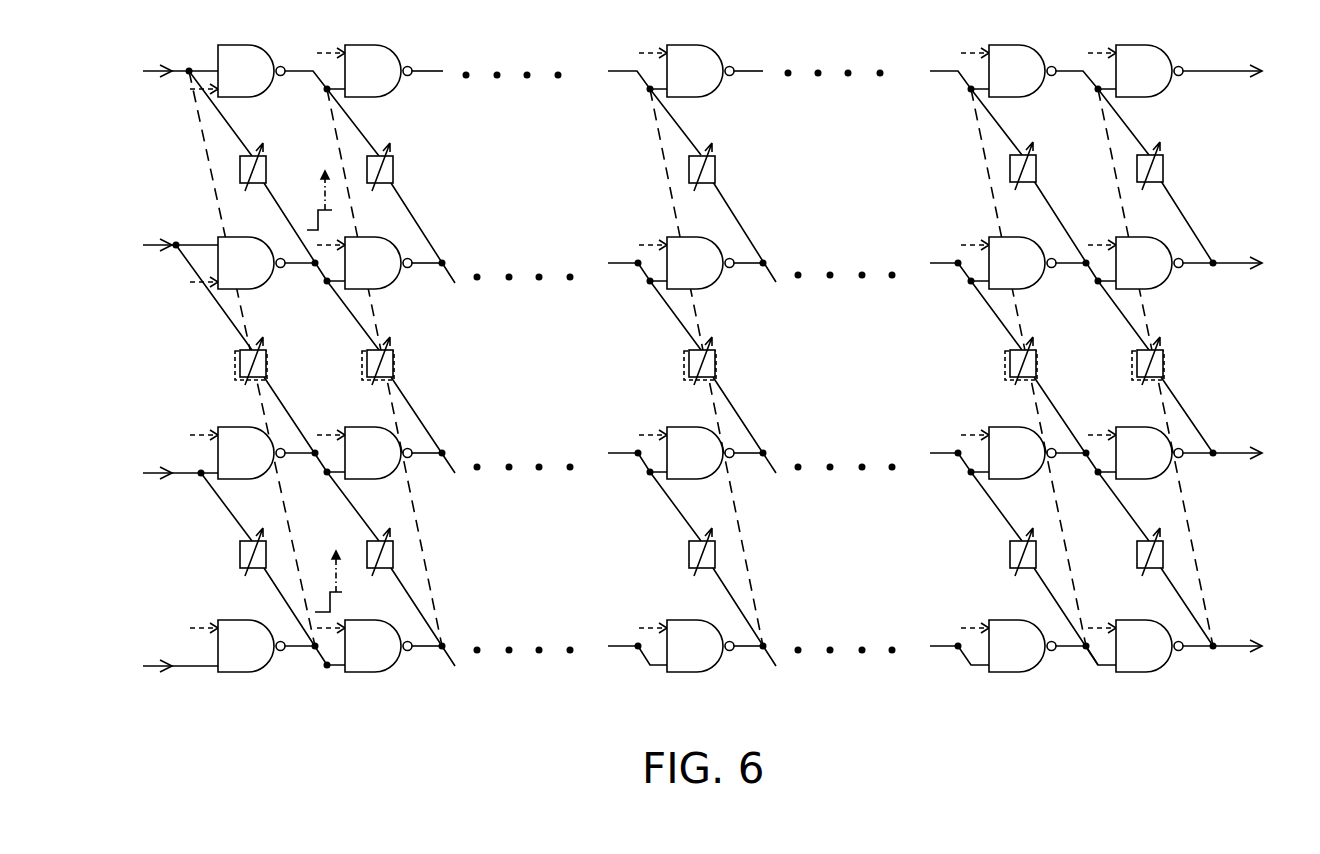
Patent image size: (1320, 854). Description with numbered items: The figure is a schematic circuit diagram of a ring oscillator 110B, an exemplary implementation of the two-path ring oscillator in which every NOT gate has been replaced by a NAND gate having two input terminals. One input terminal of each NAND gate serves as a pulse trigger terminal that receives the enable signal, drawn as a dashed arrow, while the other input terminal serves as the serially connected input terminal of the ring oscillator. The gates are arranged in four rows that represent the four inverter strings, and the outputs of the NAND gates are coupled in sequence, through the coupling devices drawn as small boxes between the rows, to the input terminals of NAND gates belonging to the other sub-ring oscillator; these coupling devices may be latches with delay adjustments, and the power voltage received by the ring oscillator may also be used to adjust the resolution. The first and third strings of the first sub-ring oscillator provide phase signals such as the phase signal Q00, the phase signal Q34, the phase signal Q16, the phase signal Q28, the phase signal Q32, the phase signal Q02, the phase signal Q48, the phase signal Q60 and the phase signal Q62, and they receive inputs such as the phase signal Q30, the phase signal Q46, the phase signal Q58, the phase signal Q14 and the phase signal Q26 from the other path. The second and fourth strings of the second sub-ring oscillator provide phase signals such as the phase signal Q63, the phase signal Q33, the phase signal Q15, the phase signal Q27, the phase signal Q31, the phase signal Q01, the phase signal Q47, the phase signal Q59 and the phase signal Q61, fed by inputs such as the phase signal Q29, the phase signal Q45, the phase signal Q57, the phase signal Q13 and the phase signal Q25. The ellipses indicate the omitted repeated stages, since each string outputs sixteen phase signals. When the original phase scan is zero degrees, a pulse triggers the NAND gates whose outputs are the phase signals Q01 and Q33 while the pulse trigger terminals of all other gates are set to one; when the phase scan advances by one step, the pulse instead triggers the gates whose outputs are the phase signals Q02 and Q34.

The ring oscillator 110B is at (702, 416).
The phase signal Q30 is at (160, 71).
The phase signal Q29 is at (160, 244).
The phase signal Q62 is at (160, 474).
The phase signal Q61 is at (160, 667).
The phase signal Q46 is at (637, 90).
The phase signal Q45 is at (637, 282).
The phase signal Q14 is at (637, 472).
The phase signal Q13 is at (637, 665).
The phase signal Q58 is at (958, 90).
The phase signal Q57 is at (958, 282).
The phase signal Q26 is at (958, 472).
The phase signal Q25 is at (958, 665).
The phase signal Q00 is at (267, 77).
The phase signal Q34 is at (394, 77).
The phase signal Q16 is at (715, 77).
The phase signal Q28 is at (1036, 77).
The phase signal Q63 is at (267, 269).
The phase signal Q33 is at (394, 269).
The phase signal Q15 is at (715, 269).
The phase signal Q27 is at (1036, 269).
The phase signal Q32 is at (267, 459).
The phase signal Q02 is at (394, 459).
The phase signal Q48 is at (715, 459).
The phase signal Q60 is at (1036, 459).
The phase signal Q31 is at (267, 652).
The phase signal Q01 is at (394, 652).
The phase signal Q47 is at (715, 652).
The phase signal Q59 is at (1036, 652).